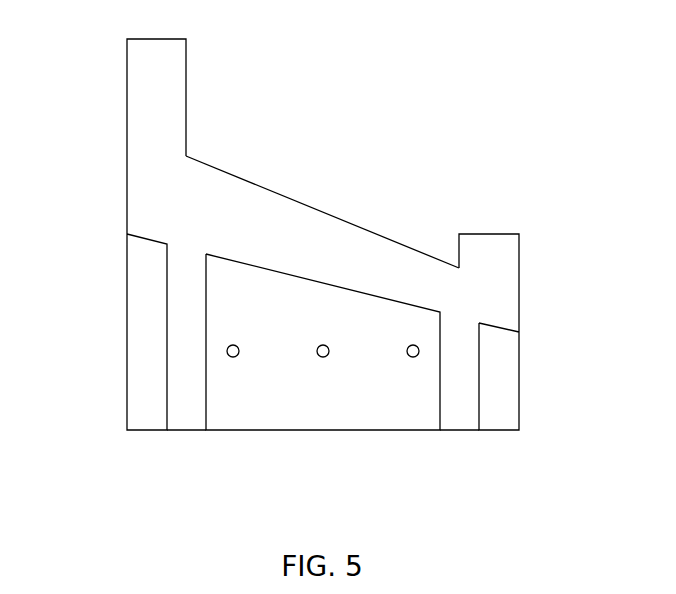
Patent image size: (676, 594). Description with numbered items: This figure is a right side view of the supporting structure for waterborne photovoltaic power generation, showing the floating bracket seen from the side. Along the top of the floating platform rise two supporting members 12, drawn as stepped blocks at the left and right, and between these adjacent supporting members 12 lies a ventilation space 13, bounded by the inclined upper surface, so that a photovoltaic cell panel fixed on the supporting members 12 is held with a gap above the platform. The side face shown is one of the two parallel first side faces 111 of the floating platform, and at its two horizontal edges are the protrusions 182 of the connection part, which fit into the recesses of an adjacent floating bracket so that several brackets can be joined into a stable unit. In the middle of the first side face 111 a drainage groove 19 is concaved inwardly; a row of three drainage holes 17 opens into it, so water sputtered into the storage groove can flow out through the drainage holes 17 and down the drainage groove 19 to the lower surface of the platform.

The supporting member 12 is at (165, 90).
The ventilation space 13 is at (333, 180).
The protrusion 182 is at (143, 349).
The drainage groove 19 is at (270, 412).
The drainage hole 17 is at (323, 357).
The first side face 111 is at (467, 407).